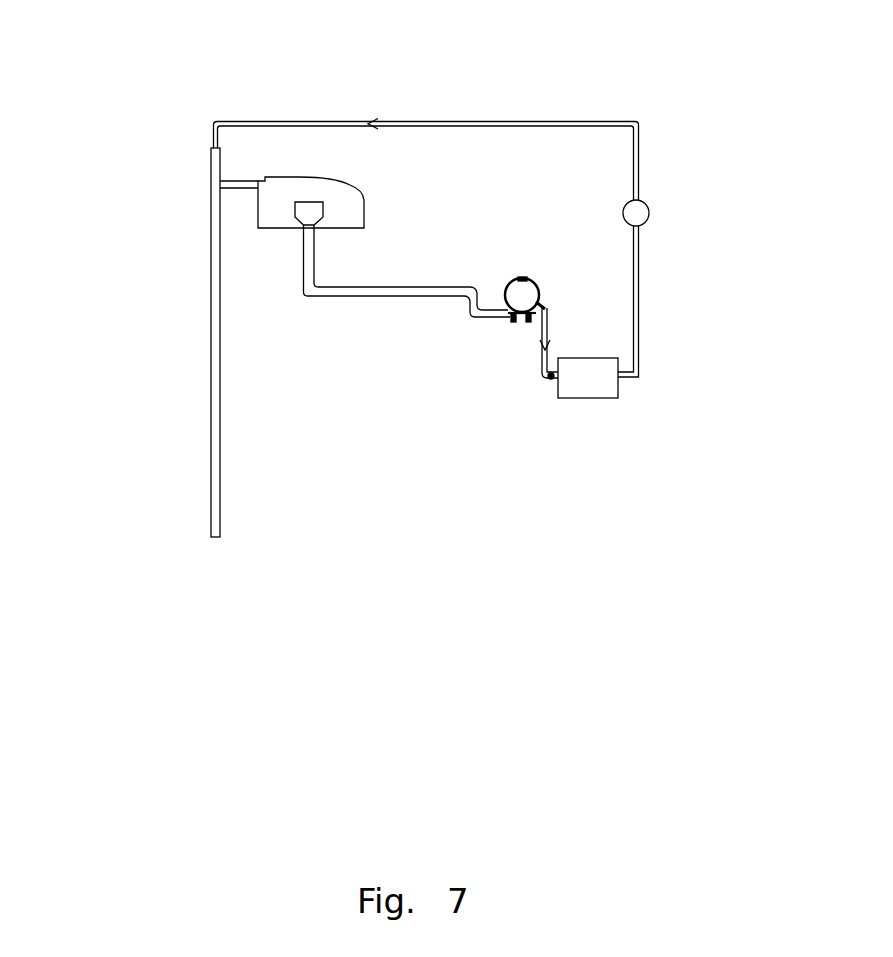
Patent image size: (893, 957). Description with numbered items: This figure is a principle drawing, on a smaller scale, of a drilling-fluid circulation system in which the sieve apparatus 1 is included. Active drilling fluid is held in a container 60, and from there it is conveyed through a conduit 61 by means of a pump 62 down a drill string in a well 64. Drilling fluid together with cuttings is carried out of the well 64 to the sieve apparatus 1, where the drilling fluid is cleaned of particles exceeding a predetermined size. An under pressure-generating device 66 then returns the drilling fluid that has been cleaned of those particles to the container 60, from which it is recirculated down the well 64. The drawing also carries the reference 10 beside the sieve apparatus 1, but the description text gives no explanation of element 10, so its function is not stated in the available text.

The sieve apparatus 1 is at (276, 170).
The liquid collecting funnel 10 is at (295, 218).
The container 60 is at (605, 398).
The conduit 61 is at (641, 165).
The pump 62 is at (649, 212).
The well 64 is at (208, 448).
The under pressure-generating device 66 is at (540, 292).